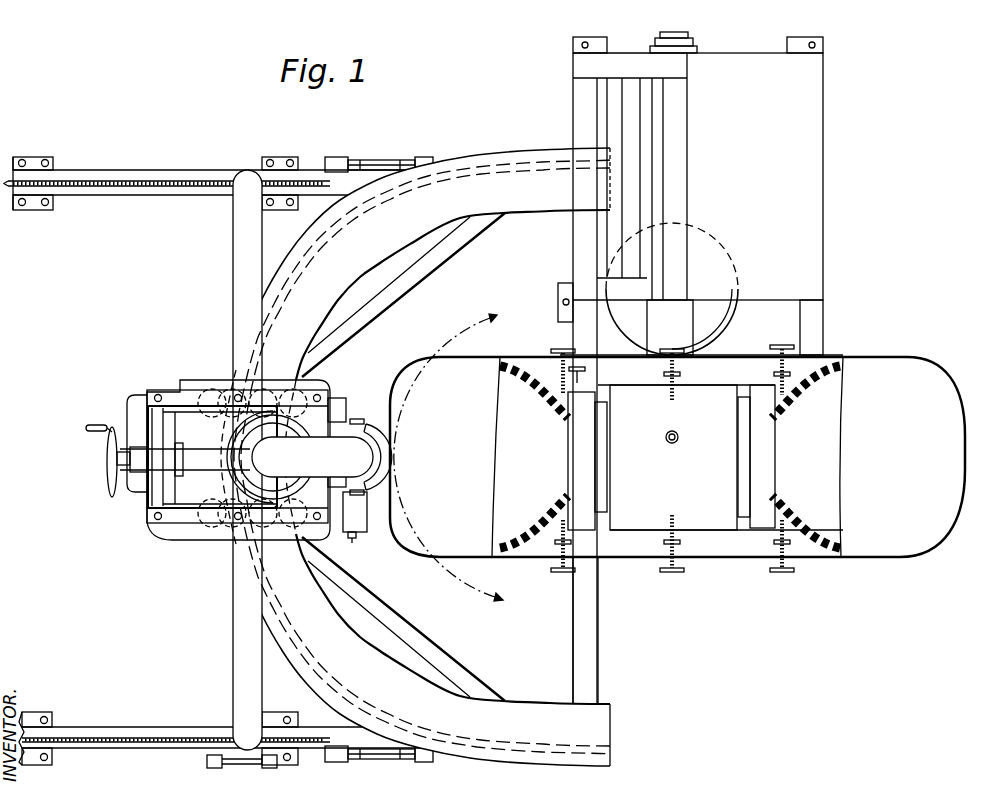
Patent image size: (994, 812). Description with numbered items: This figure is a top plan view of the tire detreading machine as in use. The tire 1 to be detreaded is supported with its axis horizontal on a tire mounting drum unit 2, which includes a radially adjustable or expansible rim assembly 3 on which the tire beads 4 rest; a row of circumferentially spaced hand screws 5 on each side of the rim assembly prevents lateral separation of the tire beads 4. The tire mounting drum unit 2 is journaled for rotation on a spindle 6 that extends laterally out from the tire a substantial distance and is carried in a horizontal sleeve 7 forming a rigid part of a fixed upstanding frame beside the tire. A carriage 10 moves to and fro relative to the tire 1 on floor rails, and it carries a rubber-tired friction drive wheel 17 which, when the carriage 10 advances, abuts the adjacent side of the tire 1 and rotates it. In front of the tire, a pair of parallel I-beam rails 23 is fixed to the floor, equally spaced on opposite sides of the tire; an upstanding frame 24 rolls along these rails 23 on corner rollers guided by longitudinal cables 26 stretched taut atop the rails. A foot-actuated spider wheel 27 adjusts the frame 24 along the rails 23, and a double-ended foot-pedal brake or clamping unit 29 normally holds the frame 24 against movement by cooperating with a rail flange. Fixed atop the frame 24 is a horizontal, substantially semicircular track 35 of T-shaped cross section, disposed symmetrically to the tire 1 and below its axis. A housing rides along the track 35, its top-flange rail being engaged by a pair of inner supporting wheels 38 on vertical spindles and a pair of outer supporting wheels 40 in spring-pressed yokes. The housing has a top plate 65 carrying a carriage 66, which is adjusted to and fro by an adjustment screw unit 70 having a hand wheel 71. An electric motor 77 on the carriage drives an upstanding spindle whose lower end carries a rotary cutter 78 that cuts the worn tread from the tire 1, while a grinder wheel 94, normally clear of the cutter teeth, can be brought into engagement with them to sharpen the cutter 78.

The tire 1 is at (915, 370).
The tire mounting drum unit 2 is at (637, 560).
The rim assembly 3 is at (760, 470).
The tire beads 4 is at (793, 497).
The hand screws 5 is at (560, 352).
The spindle 6 is at (690, 53).
The horizontal sleeve 7 is at (680, 325).
The carriage 10 is at (644, 206).
The friction drive wheel 17 is at (735, 315).
The rails 23 is at (176, 170).
The upstanding frame 24 is at (245, 658).
The cables 26 is at (104, 182).
The spider wheel 27 is at (245, 772).
The brake or clamping unit 29 is at (394, 160).
The semicircular track 35 is at (438, 698).
The inner supporting wheels 38 is at (330, 386).
The outer supporting wheels 40 is at (208, 390).
The top plate 65 is at (183, 437).
The carriage 66 is at (190, 408).
The adjustment screw unit 70 is at (194, 480).
The hand wheel 71 is at (107, 455).
The electric motor 77 is at (245, 396).
The rotary cutter 78 is at (392, 442).
The grinder wheel 94 is at (370, 538).